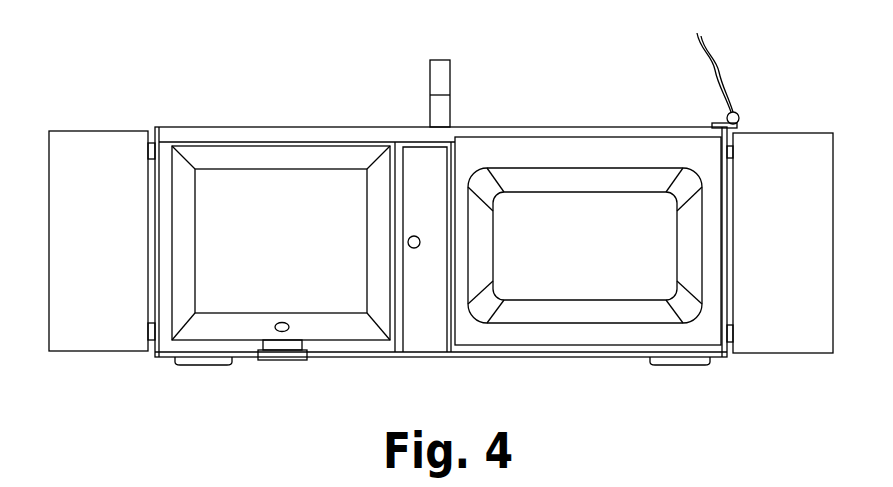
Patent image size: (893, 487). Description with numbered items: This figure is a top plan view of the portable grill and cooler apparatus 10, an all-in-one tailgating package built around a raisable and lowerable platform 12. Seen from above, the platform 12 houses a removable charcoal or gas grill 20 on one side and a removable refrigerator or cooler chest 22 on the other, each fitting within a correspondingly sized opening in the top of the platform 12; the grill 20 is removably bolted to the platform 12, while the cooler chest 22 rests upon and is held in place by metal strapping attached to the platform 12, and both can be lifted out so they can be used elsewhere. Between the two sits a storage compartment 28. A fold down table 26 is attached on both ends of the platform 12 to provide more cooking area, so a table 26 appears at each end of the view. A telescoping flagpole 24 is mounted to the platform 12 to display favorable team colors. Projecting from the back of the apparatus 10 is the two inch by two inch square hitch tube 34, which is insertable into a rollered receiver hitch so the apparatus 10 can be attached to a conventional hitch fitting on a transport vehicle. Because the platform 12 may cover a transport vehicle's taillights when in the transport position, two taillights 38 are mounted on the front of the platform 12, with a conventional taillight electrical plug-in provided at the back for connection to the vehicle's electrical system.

The portable grill and cooler apparatus 10 is at (338, 55).
The platform 12 is at (547, 357).
The grill 20 is at (296, 248).
The cooler chest 22 is at (599, 258).
The telescoping flagpole 24 is at (739, 115).
The fold down table 26 is at (111, 250).
The storage compartment 28 is at (437, 206).
The square hitch tube 34 is at (442, 111).
The taillights 38 is at (198, 365).